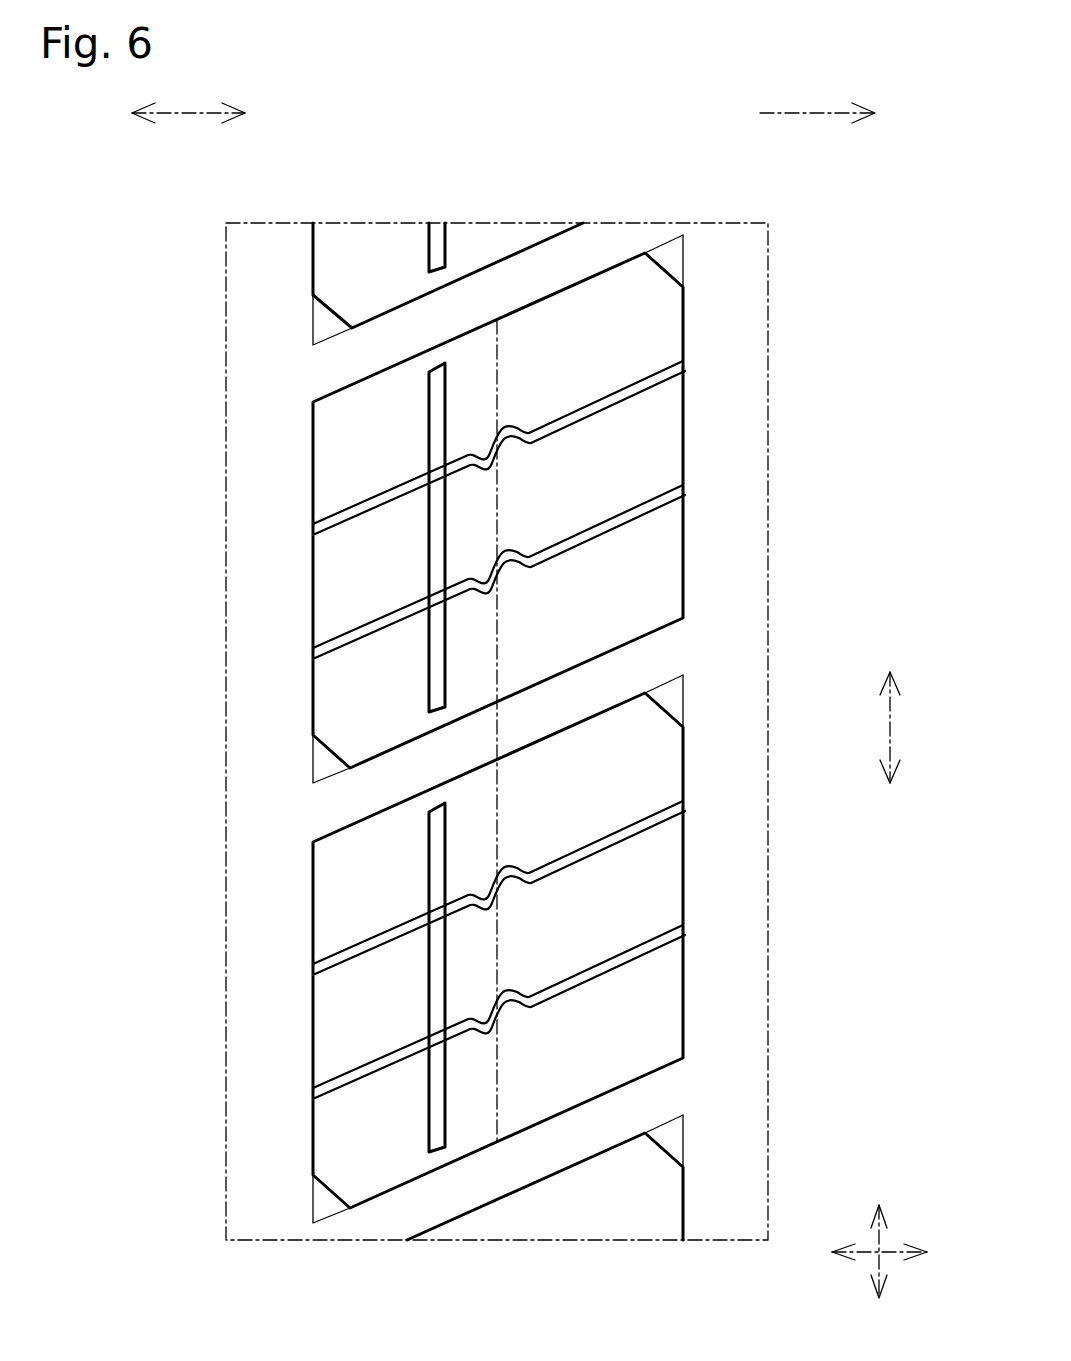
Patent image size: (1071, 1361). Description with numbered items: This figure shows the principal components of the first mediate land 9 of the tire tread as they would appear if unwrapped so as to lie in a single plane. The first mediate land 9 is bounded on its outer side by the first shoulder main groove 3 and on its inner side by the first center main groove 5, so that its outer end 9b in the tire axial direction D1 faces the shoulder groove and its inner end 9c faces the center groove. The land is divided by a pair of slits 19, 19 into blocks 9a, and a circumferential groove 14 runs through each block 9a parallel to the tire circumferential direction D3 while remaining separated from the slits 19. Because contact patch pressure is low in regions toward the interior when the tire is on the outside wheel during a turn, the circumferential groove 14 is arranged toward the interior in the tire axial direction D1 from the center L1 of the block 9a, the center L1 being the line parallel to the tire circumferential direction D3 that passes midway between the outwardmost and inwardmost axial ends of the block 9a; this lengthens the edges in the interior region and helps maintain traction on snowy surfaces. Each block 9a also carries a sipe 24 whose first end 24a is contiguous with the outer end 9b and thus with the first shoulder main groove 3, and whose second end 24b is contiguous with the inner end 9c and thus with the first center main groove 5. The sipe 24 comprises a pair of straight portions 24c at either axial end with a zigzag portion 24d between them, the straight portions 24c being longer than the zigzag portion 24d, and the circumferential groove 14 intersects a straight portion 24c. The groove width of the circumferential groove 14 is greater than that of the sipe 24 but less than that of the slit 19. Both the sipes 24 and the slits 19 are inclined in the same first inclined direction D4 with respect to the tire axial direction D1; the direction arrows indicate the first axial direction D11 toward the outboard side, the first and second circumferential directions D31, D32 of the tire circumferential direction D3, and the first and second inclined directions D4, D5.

The first shoulder main groove 3 is at (731, 234).
The first center main groove 5 is at (276, 234).
The first mediate land 9 is at (484, 235).
The first mediate block 9a is at (254, 678).
The outer end 9b is at (683, 300).
The inner end 9c is at (313, 270).
The first mediate circumferential groove 14 is at (462, 687).
The first mediate slit 19 is at (740, 1090).
The sipe 24 is at (535, 737).
The first end of sipe 24a is at (683, 364).
The second end of sipe 24b is at (313, 530).
The straight portion 24c is at (598, 402).
The zigzag portion 24d is at (507, 428).
The center in the tire axial direction of block L1 is at (553, 736).
The tire axial direction D1 is at (188, 105).
The first axial direction D11 is at (834, 103).
The tire circumferential direction D3 is at (898, 728).
The first circumferential direction D31 is at (893, 657).
The second circumferential direction D32 is at (893, 800).
The first inclined direction D4 is at (879, 1251).
The second inclined direction D5 is at (881, 1252).